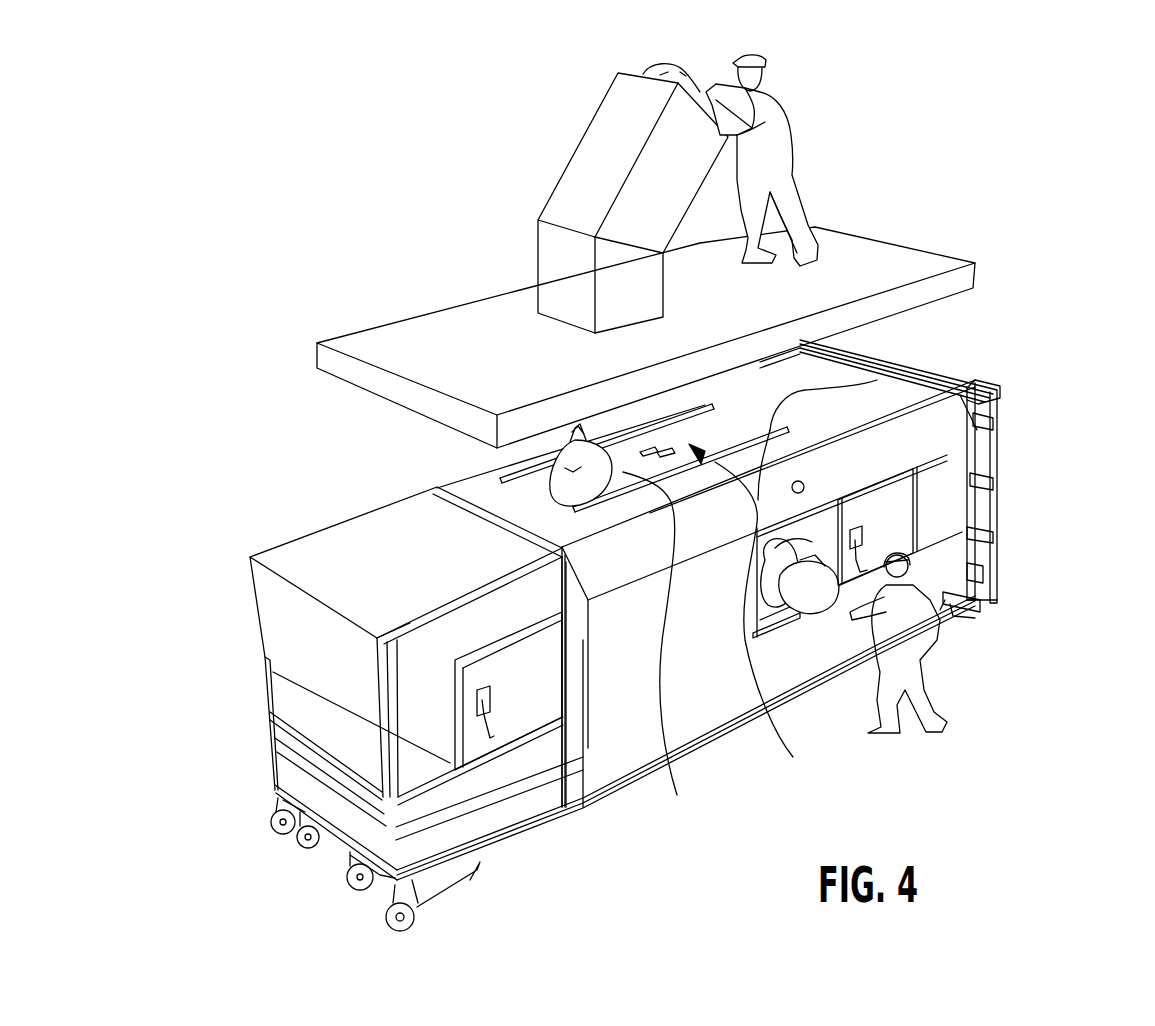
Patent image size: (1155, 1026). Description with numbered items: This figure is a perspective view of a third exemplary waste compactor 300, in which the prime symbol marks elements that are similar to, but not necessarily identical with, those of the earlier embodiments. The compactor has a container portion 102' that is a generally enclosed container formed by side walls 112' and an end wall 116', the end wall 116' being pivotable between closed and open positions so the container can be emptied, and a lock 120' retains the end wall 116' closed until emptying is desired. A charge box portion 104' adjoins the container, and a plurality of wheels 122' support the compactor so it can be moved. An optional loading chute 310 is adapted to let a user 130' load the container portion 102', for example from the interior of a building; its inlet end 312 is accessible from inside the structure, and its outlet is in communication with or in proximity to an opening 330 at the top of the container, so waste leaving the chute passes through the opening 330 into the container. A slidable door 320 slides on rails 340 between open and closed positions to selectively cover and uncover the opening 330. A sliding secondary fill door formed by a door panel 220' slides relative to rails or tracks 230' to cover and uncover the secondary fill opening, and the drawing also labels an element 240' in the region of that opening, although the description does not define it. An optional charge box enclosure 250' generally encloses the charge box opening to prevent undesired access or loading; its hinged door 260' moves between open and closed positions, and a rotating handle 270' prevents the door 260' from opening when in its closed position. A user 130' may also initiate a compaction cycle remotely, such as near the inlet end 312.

The waste compactor 300 is at (1028, 312).
The loading chute 310 is at (603, 163).
The inlet end 312 is at (699, 76).
The user 130' is at (866, 394).
The rails 340 is at (712, 402).
The end wall 116' is at (1029, 390).
The rails or tracks 230' is at (1007, 498).
The door panel 220' is at (958, 526).
The lock 120' is at (1009, 614).
The charge box enclosure 250' is at (405, 624).
The door 260' is at (373, 691).
The handle 270' is at (336, 721).
The wheels 122' is at (313, 864).
The charge box portion 104' is at (430, 813).
The container portion 102' is at (686, 755).
The opening 330 is at (661, 650).
The side walls 112' is at (762, 642).
The door 320 is at (783, 582).
The bags in compartment 240' is at (815, 636).